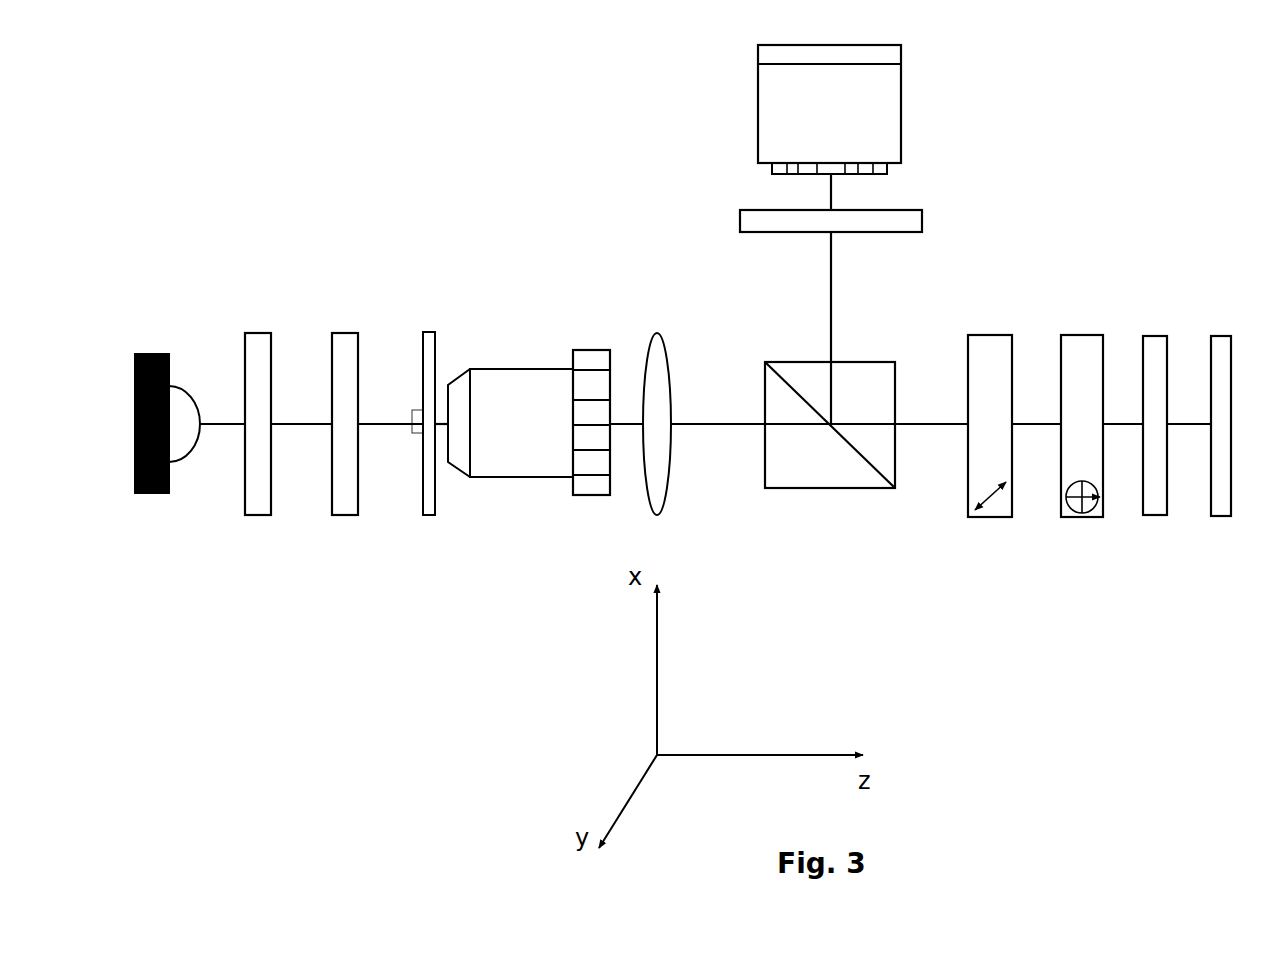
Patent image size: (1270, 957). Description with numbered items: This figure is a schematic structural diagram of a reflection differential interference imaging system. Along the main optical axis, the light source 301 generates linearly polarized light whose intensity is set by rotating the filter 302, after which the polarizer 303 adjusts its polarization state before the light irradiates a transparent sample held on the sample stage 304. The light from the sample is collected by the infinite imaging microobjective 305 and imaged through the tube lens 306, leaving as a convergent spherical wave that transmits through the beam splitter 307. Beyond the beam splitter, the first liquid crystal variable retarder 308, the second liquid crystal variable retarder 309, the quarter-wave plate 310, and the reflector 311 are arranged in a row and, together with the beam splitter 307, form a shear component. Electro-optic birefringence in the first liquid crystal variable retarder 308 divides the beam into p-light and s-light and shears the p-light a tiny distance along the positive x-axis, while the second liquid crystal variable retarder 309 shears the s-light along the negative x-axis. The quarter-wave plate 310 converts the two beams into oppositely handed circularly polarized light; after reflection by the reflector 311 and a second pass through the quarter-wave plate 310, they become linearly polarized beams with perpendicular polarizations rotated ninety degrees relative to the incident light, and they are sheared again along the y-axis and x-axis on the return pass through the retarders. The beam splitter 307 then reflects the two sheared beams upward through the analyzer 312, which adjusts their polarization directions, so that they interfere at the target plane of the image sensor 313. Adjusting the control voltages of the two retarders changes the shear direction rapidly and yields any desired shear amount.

The light source 301 is at (152, 355).
The filter 302 is at (255, 332).
The polarizer 303 is at (342, 333).
The sample stage 304 is at (428, 331).
The infinite imaging microobjective 305 is at (523, 368).
The tube lens 306 is at (657, 332).
The beam splitter 307 is at (767, 362).
The first liquid crystal variable retarder 308 is at (988, 335).
The second liquid crystal variable retarder 309 is at (1084, 335).
The quarter-wave plate 310 is at (1155, 336).
The reflector 311 is at (1222, 336).
The analyzer 312 is at (922, 218).
The image sensor 313 is at (901, 105).